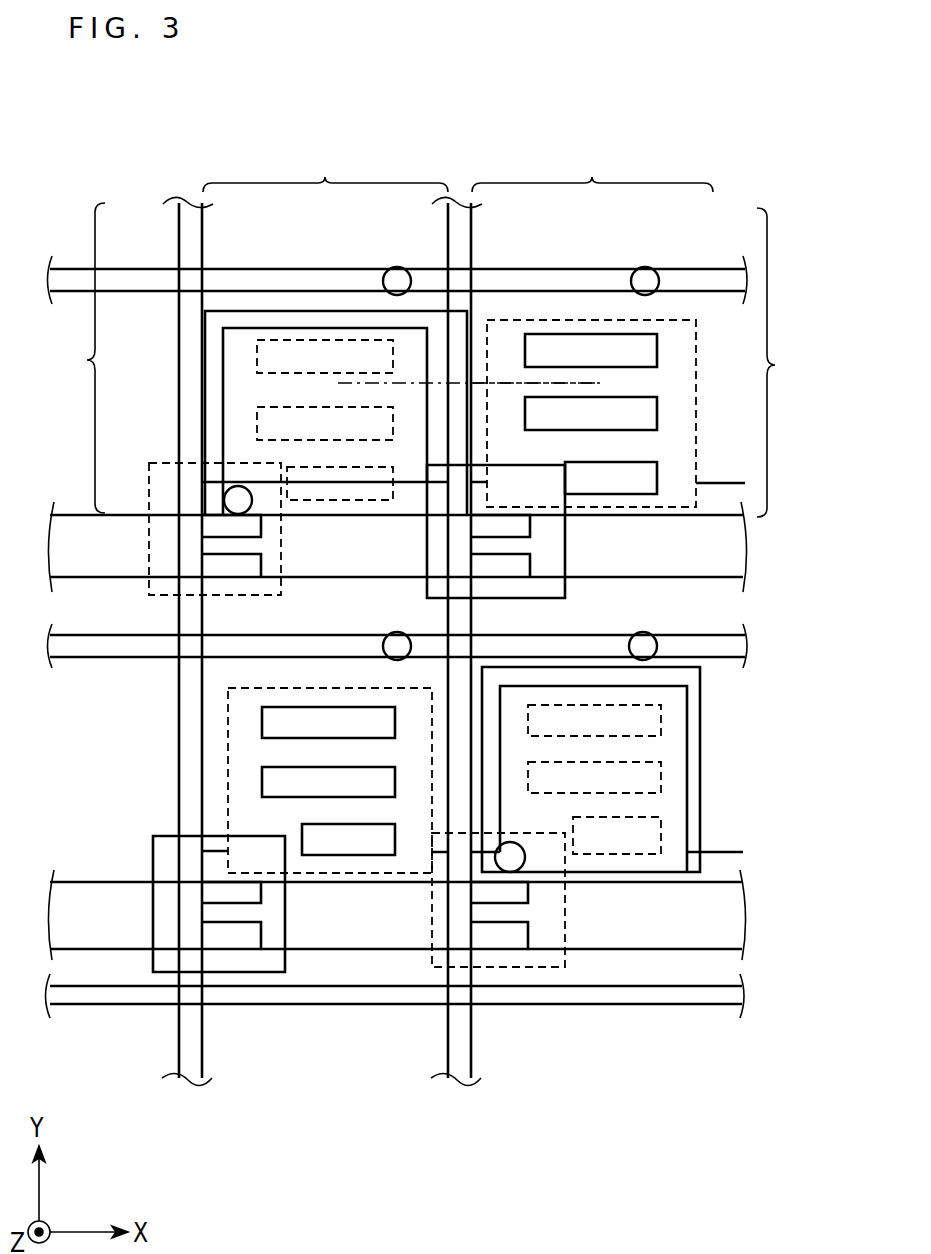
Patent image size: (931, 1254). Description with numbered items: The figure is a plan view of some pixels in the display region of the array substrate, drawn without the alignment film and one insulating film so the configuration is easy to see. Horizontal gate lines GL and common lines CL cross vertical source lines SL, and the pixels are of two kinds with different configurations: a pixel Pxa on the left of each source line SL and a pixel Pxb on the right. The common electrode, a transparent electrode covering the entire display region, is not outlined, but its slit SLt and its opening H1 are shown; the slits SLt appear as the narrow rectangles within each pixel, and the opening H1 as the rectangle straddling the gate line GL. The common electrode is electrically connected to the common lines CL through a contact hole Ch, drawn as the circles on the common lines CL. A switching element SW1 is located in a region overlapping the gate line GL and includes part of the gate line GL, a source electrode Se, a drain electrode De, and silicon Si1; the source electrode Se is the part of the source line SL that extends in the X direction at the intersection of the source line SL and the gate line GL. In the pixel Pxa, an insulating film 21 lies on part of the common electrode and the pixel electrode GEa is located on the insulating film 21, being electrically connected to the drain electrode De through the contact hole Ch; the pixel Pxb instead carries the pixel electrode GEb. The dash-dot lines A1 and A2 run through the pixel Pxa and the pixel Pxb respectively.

The source line SL is at (455, 201).
The common line CL is at (740, 647).
The gate line GL is at (740, 920).
The insulating film 21 is at (313, 310).
The pixel electrode GEa is at (240, 327).
The pixel electrode GEb is at (676, 320).
The slit SLt is at (362, 340).
The contact hole Ch is at (248, 490).
The line A1 is at (454, 382).
The line A2 is at (551, 382).
The drain electrode De is at (205, 493).
The silicon Si1 is at (252, 526).
The source electrode Se is at (252, 548).
The switching element SW1 is at (266, 570).
The opening H1 is at (227, 595).
The pixel Pxa is at (246, 333).
The pixel Pxb is at (645, 335).